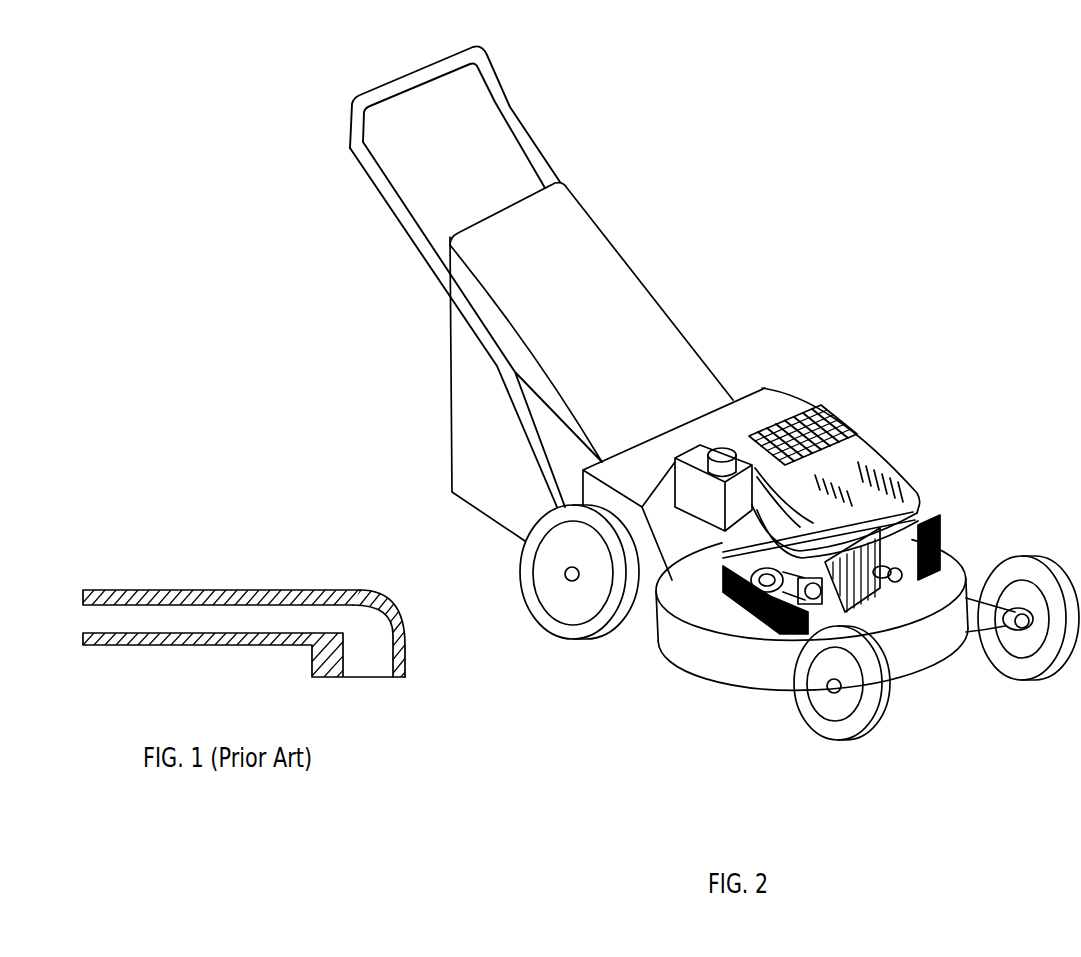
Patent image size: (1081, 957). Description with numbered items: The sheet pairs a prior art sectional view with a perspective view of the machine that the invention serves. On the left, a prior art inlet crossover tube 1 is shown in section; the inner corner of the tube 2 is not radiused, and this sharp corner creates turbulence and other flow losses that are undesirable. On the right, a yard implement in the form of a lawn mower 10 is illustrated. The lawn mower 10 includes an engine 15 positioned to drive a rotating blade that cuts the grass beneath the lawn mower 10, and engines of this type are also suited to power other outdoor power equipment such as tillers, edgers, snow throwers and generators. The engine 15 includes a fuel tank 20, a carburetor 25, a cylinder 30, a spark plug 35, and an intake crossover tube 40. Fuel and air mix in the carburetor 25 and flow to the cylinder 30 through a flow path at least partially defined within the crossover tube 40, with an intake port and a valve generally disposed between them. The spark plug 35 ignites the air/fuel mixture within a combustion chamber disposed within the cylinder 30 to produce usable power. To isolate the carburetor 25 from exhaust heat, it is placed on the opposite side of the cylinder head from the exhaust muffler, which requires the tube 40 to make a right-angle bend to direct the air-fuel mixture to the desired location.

In FIG. 1, the prior art tube 1 is at (175, 592).
In FIG. 1, the inner corner of the tube 2 is at (343, 632).
In FIG. 2, the lawn mower 10 is at (878, 220).
In FIG. 2, the engine 15 is at (887, 365).
In FIG. 2, the fuel tank 20 is at (650, 443).
In FIG. 2, the carburetor 25 is at (722, 555).
In FIG. 2, the cylinder 30 is at (855, 570).
In FIG. 2, the spark plug 35 is at (897, 570).
In FIG. 2, the intake crossover tube 40 is at (833, 555).